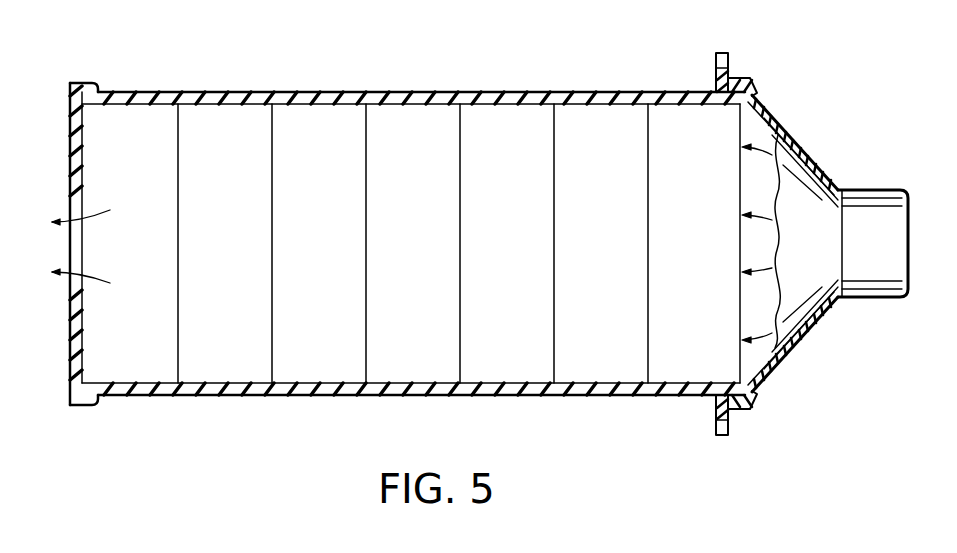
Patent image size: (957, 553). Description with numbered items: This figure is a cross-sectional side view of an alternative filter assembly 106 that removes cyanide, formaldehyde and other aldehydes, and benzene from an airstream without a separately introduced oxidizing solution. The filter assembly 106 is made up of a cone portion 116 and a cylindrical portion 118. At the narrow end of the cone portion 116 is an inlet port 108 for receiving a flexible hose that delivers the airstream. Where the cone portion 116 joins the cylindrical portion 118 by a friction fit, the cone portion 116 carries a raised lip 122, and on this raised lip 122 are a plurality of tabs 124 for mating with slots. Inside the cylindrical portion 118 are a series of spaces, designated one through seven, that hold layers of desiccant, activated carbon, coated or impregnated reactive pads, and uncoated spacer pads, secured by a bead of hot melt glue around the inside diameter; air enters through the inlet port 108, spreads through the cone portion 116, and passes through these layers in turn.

The filter assembly 106 is at (503, 28).
The cylindrical portion 118 is at (548, 92).
The cone portion 116 is at (782, 136).
The inlet port 108 is at (872, 297).
The raised lip 122 is at (752, 412).
The tabs 124 is at (728, 56).